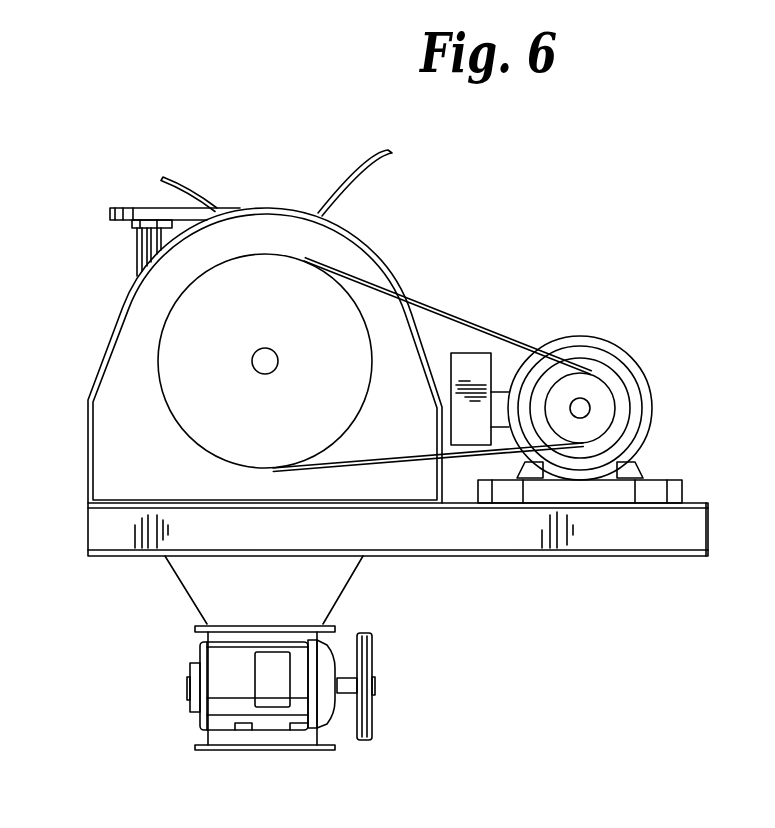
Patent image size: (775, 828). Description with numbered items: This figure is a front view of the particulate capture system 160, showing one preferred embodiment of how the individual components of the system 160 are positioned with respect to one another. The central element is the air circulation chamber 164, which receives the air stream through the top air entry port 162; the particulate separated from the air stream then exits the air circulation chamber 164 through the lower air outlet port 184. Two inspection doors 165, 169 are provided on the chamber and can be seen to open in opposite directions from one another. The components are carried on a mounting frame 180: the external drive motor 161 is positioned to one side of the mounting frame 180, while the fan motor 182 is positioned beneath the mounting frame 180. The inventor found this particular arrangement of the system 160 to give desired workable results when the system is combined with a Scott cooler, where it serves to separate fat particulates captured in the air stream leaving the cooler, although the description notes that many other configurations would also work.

The particulate capture system 160 is at (491, 248).
The external drive motor 161 is at (657, 413).
The top air entry port 162 is at (137, 257).
The air circulation chamber 164 is at (158, 464).
The inspection door 165 is at (366, 150).
The inspection door 169 is at (187, 187).
The mounting frame 180 is at (501, 533).
The fan motor 182 is at (200, 647).
The lower air outlet port 184 is at (243, 749).